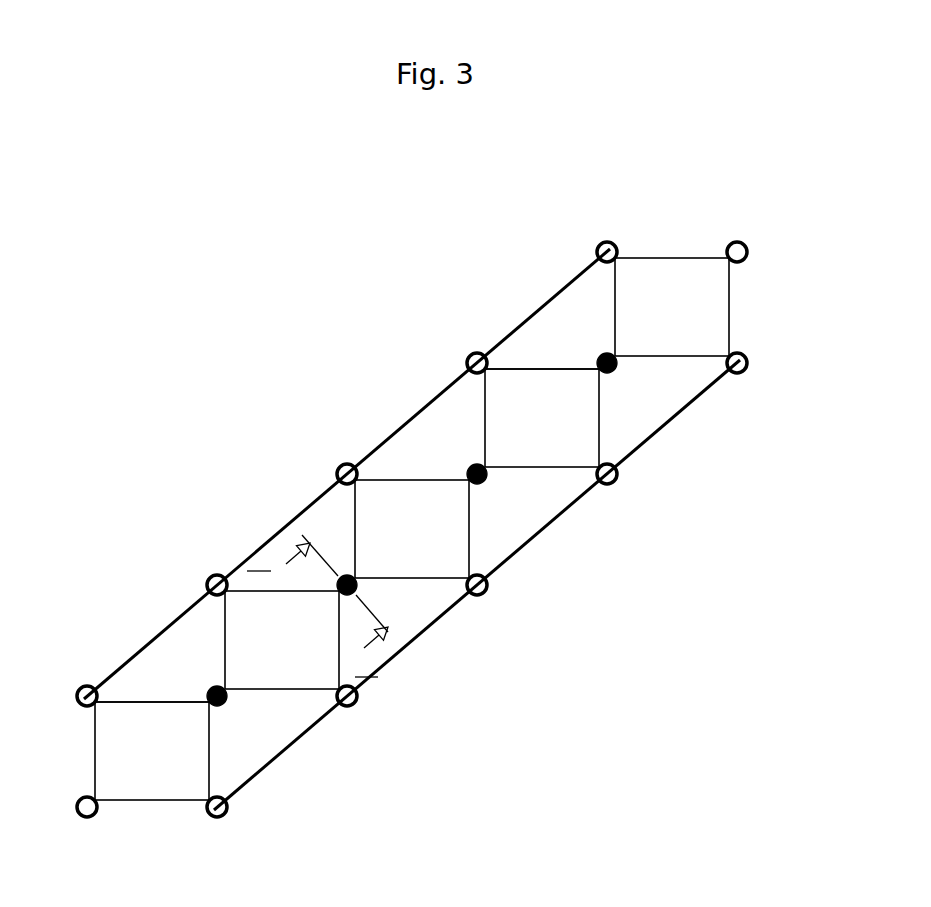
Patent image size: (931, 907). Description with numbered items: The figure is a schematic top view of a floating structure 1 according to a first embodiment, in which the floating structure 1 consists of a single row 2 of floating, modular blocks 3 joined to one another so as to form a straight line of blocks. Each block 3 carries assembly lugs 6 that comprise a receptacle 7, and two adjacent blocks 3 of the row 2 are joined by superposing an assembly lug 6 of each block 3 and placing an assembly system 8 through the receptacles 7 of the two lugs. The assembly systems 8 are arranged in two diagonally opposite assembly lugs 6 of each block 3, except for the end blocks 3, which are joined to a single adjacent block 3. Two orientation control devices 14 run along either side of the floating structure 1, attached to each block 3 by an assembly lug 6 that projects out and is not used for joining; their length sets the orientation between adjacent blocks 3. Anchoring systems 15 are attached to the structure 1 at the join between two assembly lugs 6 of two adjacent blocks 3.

The floating structure 1 is at (290, 390).
The row 2 is at (730, 212).
The block 3 is at (152, 772).
The assembly lug 6 is at (742, 372).
The receptacle 7 is at (352, 707).
The assembly system 8 is at (483, 480).
The orientation control device 14 is at (298, 513).
The anchoring system 15 is at (605, 355).